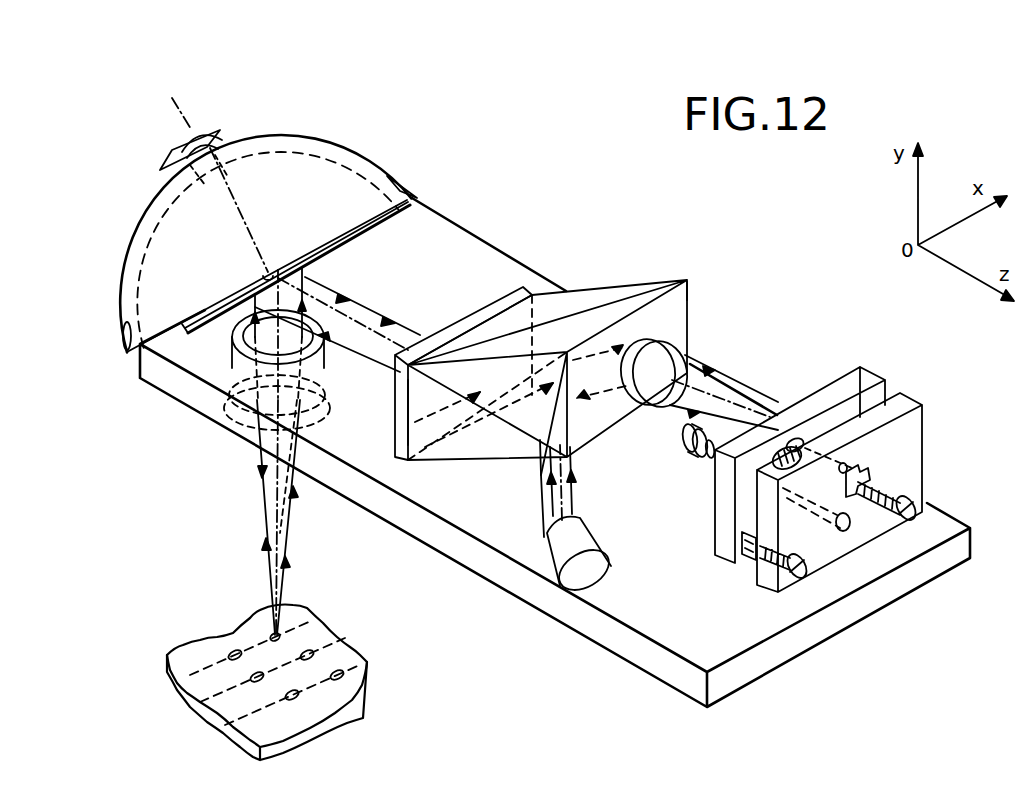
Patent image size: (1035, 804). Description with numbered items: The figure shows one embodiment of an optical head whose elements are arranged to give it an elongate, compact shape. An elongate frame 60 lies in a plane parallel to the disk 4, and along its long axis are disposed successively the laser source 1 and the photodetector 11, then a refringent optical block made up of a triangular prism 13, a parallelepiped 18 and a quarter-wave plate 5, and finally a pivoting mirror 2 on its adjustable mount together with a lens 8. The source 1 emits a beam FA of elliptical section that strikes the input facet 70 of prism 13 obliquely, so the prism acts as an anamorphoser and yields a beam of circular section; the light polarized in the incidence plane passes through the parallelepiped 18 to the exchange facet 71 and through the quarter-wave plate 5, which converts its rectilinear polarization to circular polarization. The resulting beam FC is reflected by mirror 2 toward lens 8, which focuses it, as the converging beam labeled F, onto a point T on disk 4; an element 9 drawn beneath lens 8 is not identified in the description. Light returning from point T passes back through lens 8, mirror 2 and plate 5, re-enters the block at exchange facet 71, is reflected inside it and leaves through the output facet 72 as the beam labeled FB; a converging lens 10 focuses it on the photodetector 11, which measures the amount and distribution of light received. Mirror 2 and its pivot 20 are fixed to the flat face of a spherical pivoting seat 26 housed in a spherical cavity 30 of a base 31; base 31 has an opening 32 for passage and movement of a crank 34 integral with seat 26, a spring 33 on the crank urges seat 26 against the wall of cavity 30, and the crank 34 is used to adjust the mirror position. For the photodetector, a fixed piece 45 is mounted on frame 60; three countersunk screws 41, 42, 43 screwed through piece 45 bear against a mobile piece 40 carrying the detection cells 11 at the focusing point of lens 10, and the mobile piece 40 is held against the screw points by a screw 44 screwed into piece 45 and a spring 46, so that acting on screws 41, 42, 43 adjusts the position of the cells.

The source 1 is at (603, 572).
The mirror 2 is at (396, 259).
The disk 4 is at (332, 717).
The quarter-wave plate 5 is at (485, 312).
The lens 8 is at (180, 418).
The lens holder 9 is at (328, 400).
The converging lens 10 is at (750, 330).
The photodetector 11 is at (803, 440).
The triangular prism 13 is at (468, 488).
The quadrangular prism 18 is at (558, 426).
The pivot 20 is at (267, 273).
The spherical pivoting seat 26 is at (323, 177).
The spherical cavity 30 is at (330, 237).
The base 31 is at (402, 188).
The opening 32 is at (237, 160).
The spring 33 is at (180, 167).
The crank 34 is at (206, 140).
The mobile piece 40 is at (877, 378).
The countersunk screw 41 is at (808, 572).
The countersunk screw 42 is at (920, 500).
The countersunk screw 43 is at (850, 467).
The screw 44 is at (697, 450).
The fixed piece 45 is at (918, 400).
The spring 46 is at (703, 467).
The frame 60 is at (823, 694).
The input facet 70 is at (537, 507).
The exchange facet 71 is at (407, 433).
The output facet 72 is at (692, 300).
The focused light beam F is at (265, 497).
The light beam FA is at (568, 500).
The light beam to photodetector FB is at (712, 392).
The beam FC is at (370, 320).
The point T is at (273, 636).